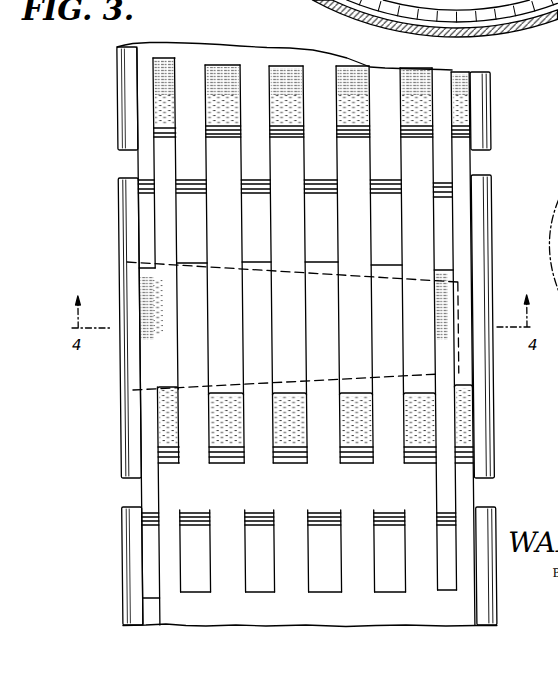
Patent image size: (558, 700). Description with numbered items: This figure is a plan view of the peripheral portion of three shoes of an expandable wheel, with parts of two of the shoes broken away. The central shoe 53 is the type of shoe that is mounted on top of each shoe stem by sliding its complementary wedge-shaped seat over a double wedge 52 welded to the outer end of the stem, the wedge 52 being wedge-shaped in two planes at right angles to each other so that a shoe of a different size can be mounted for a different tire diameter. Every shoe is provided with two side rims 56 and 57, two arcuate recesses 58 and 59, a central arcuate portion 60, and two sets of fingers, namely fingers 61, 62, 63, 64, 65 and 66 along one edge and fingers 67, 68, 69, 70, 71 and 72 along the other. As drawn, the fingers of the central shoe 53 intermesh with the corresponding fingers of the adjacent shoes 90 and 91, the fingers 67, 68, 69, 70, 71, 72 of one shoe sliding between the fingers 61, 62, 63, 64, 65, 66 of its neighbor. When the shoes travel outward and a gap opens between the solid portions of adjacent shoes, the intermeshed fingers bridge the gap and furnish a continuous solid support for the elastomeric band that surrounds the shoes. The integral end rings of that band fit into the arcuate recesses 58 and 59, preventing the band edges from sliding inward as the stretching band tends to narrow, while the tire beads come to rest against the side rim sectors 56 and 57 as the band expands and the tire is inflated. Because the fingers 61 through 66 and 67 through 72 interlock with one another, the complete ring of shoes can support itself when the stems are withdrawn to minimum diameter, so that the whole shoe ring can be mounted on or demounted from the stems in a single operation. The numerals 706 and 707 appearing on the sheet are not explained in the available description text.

The adjacent shoe 90 is at (235, 47).
The adjacent shoe 91 is at (167, 625).
The side rim 56 is at (128, 230).
The side rim 57 is at (476, 207).
The shoe 53 is at (119, 425).
The recess 58 is at (168, 303).
The recess 59 is at (439, 312).
The central arcuate portion 60 is at (293, 326).
The finger 61 is at (142, 522).
The finger 62 is at (187, 520).
The finger 63 is at (252, 520).
The finger 64 is at (318, 520).
The finger 65 is at (383, 520).
The finger 66 is at (442, 525).
The finger 67 is at (162, 142).
The finger 68 is at (221, 138).
The finger 69 is at (292, 140).
The finger 70 is at (357, 140).
The finger 71 is at (414, 143).
The finger 72 is at (459, 137).
The wedge 52 is at (413, 7).
The drum flange 706 is at (543, 263).
The drum hub 707 is at (541, 148).